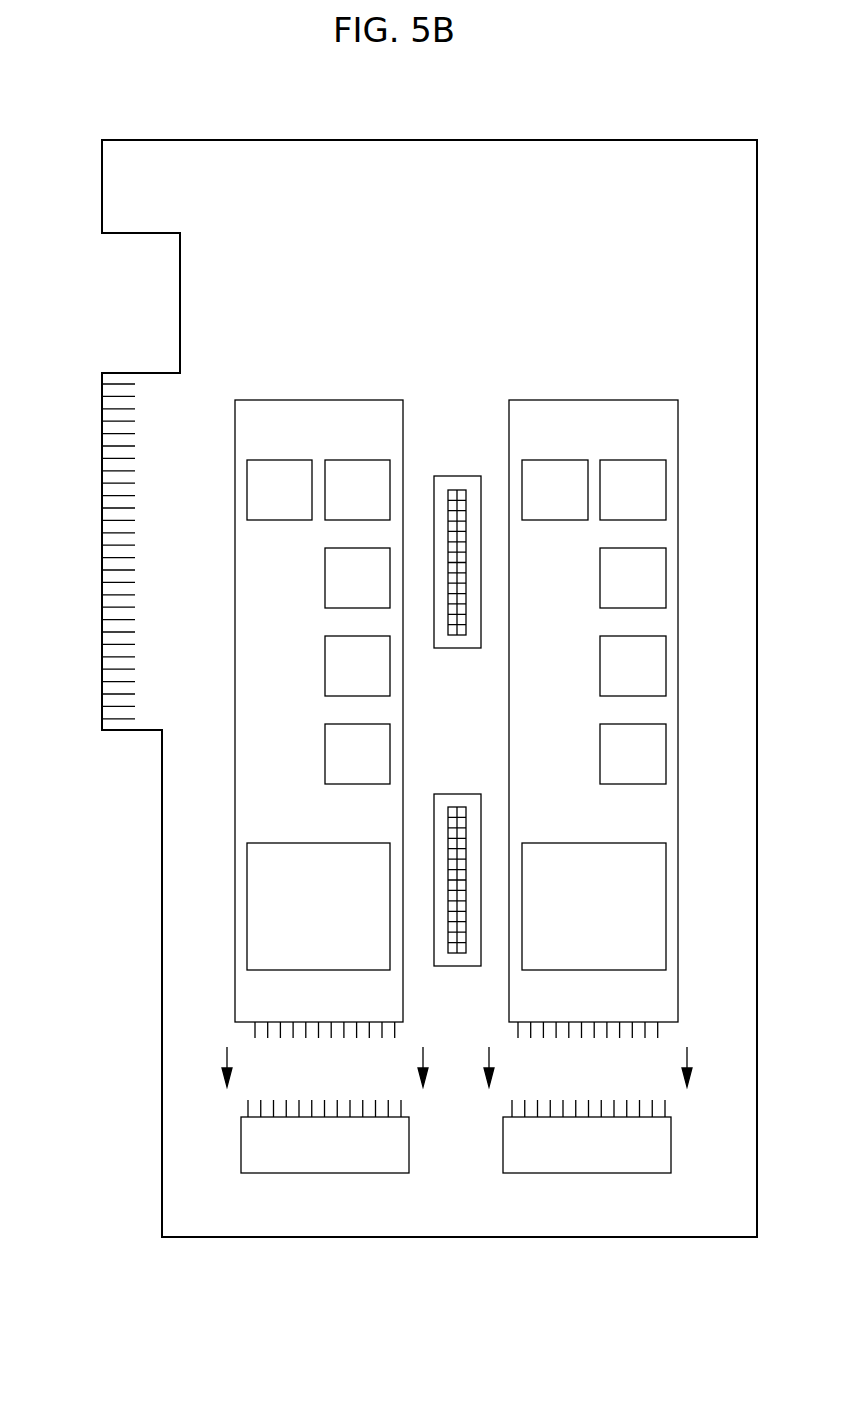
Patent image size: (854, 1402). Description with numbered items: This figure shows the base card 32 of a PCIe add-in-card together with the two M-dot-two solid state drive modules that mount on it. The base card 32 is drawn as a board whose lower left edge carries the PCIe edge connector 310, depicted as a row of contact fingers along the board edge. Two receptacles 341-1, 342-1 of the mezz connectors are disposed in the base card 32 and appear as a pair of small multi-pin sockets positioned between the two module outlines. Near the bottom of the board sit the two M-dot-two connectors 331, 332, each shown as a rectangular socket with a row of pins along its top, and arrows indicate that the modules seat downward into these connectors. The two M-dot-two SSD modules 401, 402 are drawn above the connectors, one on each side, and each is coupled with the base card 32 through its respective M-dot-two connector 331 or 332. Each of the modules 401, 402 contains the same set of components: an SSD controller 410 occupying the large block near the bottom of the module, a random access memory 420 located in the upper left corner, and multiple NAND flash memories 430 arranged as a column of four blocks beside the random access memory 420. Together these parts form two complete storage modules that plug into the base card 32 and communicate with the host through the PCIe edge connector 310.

The base card 32 is at (703, 141).
The PCIe edge connector 310 is at (116, 722).
The M.2 SSD module 401 is at (319, 707).
The M.2 SSD module 402 is at (622, 400).
The SSD controller 410 is at (321, 843).
The random access memory 420 is at (288, 458).
The NAND flash memories 430 is at (390, 440).
The receptacle 341-1 is at (455, 476).
The receptacle 342-1 is at (455, 794).
The M.2 connector 331 is at (325, 1136).
The M.2 connector 332 is at (587, 1136).